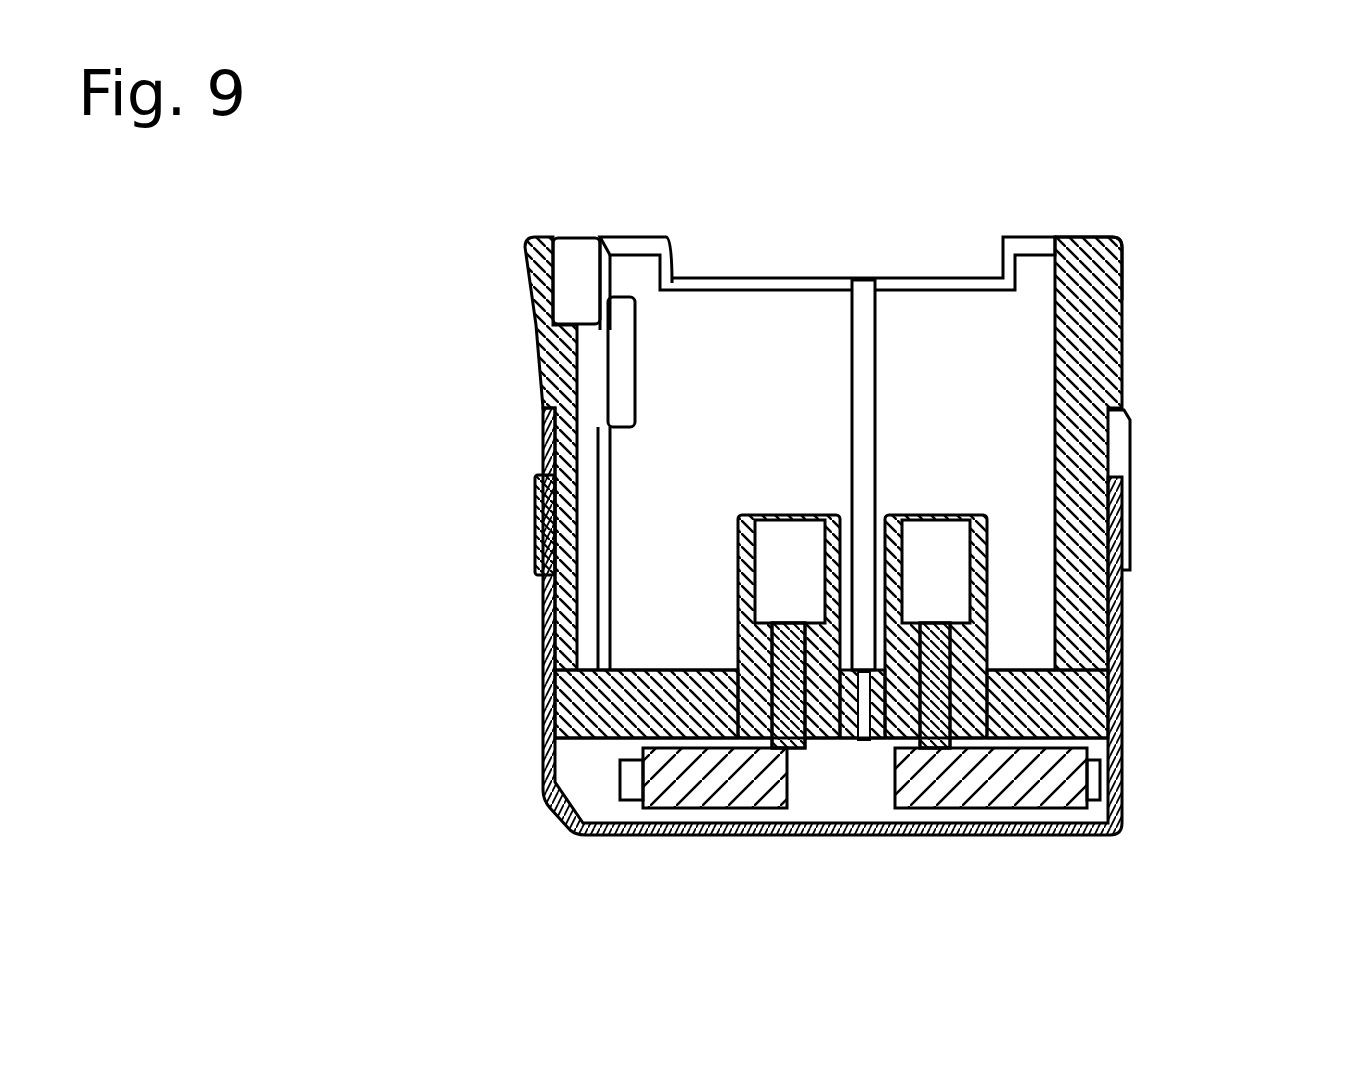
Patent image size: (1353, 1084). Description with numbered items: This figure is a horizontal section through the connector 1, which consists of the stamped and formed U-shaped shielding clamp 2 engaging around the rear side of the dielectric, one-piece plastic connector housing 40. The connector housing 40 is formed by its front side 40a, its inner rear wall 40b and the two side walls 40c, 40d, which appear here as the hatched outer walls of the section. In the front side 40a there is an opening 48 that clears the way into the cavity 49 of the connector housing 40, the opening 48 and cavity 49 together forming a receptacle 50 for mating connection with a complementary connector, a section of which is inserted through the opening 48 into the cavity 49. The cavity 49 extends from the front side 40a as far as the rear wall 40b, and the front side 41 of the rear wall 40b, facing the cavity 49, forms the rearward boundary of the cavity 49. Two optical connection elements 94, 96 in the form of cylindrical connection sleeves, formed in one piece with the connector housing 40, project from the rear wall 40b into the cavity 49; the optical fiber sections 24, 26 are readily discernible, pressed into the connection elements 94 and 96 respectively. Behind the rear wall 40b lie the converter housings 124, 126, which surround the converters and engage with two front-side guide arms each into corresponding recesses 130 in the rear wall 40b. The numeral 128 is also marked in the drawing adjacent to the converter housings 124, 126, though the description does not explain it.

The connector 1 is at (1205, 269).
The shielding clamp 2 is at (1122, 597).
The optical fiber section 24 is at (790, 748).
The optical fiber section 26 is at (935, 748).
The connector housing 40 is at (1122, 372).
The front side 40a is at (1080, 240).
The rear wall 40b is at (830, 705).
The side wall 40c is at (577, 520).
The side wall 40d is at (1083, 487).
The front side of the rear wall 41 is at (643, 650).
The opening 48 is at (705, 290).
The cavity 49 is at (790, 410).
The receptacle 50 is at (948, 340).
The optical connection element 94 is at (755, 564).
The optical connection element 96 is at (961, 564).
The converter housing 124 is at (705, 830).
The converter housing 126 is at (1038, 820).
The bottom opening 128 is at (828, 766).
The recess 130 is at (828, 656).